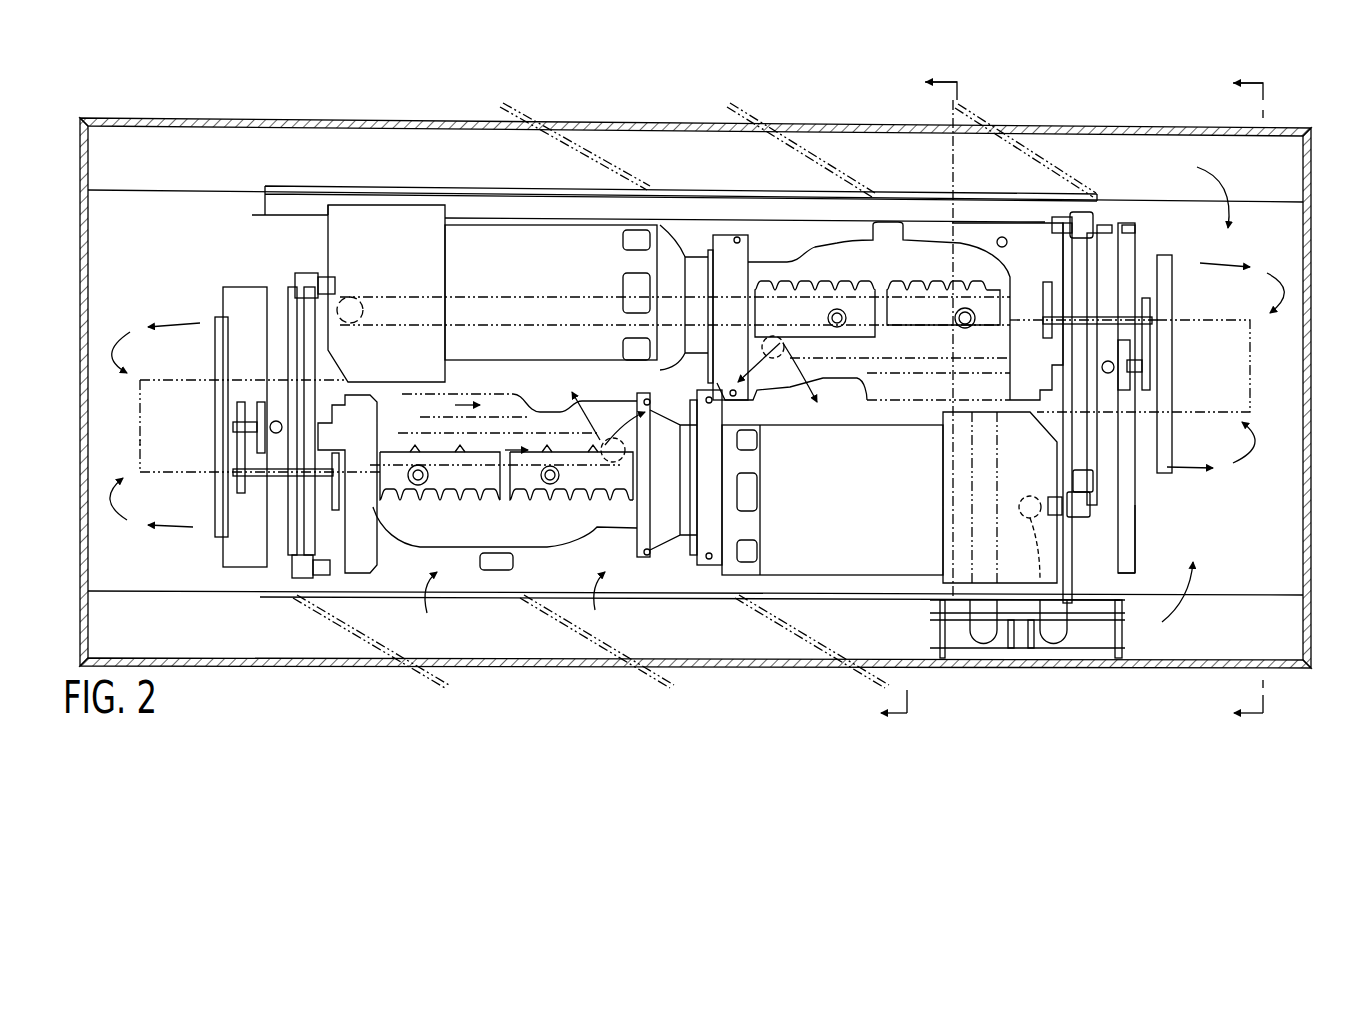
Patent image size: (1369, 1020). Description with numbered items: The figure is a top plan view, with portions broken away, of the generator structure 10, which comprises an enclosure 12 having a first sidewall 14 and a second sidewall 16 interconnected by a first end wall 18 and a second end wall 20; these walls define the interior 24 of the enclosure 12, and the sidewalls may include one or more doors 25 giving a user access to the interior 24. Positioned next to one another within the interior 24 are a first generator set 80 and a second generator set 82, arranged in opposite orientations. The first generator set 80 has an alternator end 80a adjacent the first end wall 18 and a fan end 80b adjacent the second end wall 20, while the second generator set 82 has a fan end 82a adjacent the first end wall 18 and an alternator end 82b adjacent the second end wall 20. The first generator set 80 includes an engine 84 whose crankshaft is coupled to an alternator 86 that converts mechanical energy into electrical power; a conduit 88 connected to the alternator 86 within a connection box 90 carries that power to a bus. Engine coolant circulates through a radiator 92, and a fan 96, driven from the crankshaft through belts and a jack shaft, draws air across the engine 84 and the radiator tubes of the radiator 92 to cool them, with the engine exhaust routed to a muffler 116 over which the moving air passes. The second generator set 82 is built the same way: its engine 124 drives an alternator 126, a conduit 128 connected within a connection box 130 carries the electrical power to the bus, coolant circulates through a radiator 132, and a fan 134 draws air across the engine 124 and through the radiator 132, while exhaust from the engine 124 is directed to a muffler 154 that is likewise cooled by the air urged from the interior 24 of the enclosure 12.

The generator structure 10 is at (372, 755).
The enclosure 12 is at (1310, 128).
The first sidewall 14 is at (652, 600).
The second sidewall 16 is at (420, 190).
The first end wall 18 is at (85, 323).
The second end wall 20 is at (1313, 328).
The interior 24 is at (206, 231).
The doors 25 is at (515, 105).
The first generator set 80 is at (712, 243).
The alternator end 80a is at (328, 243).
The fan end 80b is at (1172, 252).
The second generator set 82 is at (706, 575).
The fan end 82a is at (217, 545).
The alternator end 82b is at (1058, 548).
The engine 84 is at (940, 240).
The alternator 86 is at (495, 225).
The conduit 88 is at (983, 630).
The connection box 90 is at (328, 260).
The radiator 92 is at (1083, 263).
The fan 96 is at (1163, 467).
The muffler 116 is at (1250, 373).
The engine 124 is at (457, 557).
The alternator 126 is at (856, 505).
The conduit 128 is at (1048, 630).
The connection box 130 is at (1027, 453).
The radiator 132 is at (302, 335).
The fan 134 is at (220, 322).
The muffler 154 is at (137, 445).